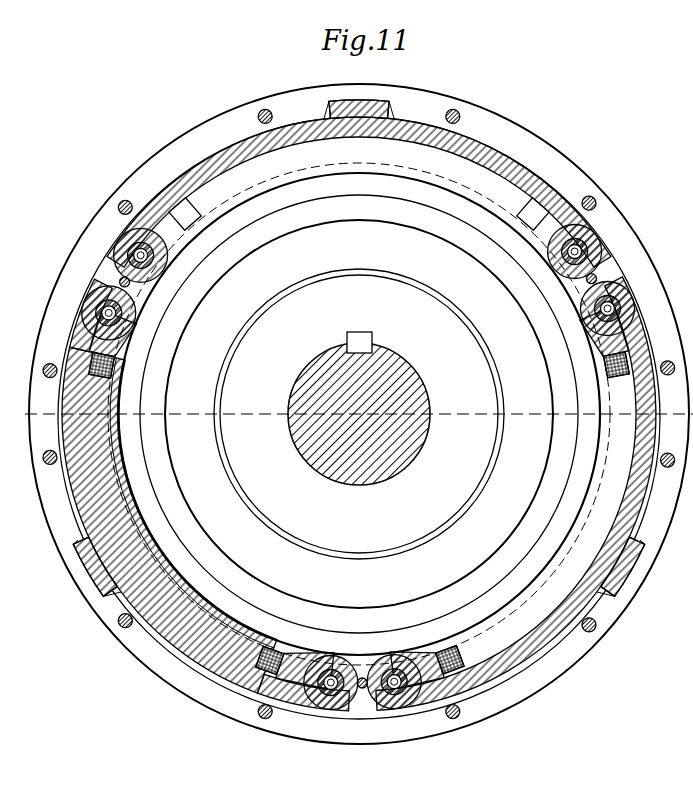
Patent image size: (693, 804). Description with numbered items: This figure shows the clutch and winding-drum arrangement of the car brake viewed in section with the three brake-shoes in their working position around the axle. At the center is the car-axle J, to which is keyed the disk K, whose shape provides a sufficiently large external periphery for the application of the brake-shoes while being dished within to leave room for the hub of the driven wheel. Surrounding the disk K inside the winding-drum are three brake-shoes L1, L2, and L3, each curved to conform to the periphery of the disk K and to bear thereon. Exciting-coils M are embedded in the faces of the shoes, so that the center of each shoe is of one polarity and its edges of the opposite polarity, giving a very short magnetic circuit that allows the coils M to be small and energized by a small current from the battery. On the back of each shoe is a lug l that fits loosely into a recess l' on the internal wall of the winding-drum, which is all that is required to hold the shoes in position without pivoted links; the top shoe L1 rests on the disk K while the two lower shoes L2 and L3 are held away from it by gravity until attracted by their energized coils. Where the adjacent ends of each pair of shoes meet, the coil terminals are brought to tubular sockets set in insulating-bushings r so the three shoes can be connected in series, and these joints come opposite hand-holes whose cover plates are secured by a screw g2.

The car-axle J is at (359, 408).
The disk K is at (359, 414).
The exciting-coils M is at (359, 412).
The brake-shoe L1 is at (488, 160).
The brake-shoe L2 is at (86, 316).
The brake-shoe L3 is at (533, 652).
The insulating-bushings r is at (128, 252).
The screw g2 is at (347, 479).
The lug l is at (366, 341).
The recess l' is at (368, 356).